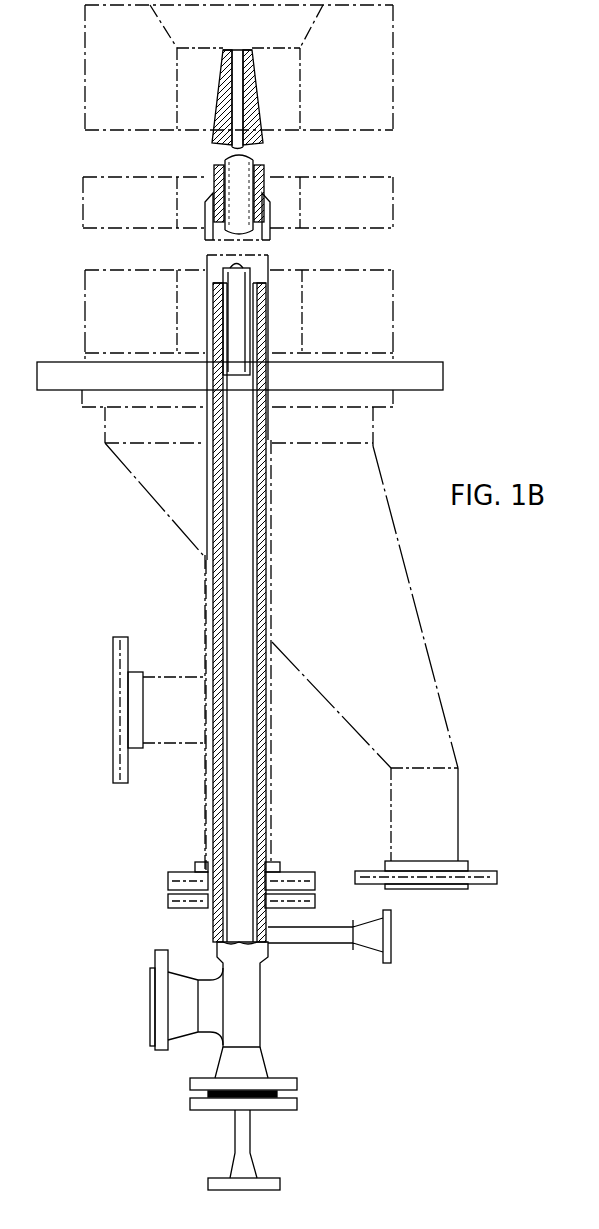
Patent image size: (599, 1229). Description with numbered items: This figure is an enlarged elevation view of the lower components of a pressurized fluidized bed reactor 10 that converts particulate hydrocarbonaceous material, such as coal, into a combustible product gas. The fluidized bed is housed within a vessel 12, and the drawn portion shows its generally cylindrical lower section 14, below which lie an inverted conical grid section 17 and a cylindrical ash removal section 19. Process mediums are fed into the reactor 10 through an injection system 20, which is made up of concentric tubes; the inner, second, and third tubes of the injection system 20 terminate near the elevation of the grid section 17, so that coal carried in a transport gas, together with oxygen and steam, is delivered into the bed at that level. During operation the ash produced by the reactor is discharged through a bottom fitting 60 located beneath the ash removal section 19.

The pressurized fluidized bed reactor 10 is at (55, 170).
The vessel 12 is at (85, 285).
The lower section 14 is at (393, 66).
The grid section 17 is at (305, 41).
The ash removal section 19 is at (393, 215).
The injection system 20 is at (360, 206).
The bottom fitting 60 is at (458, 836).